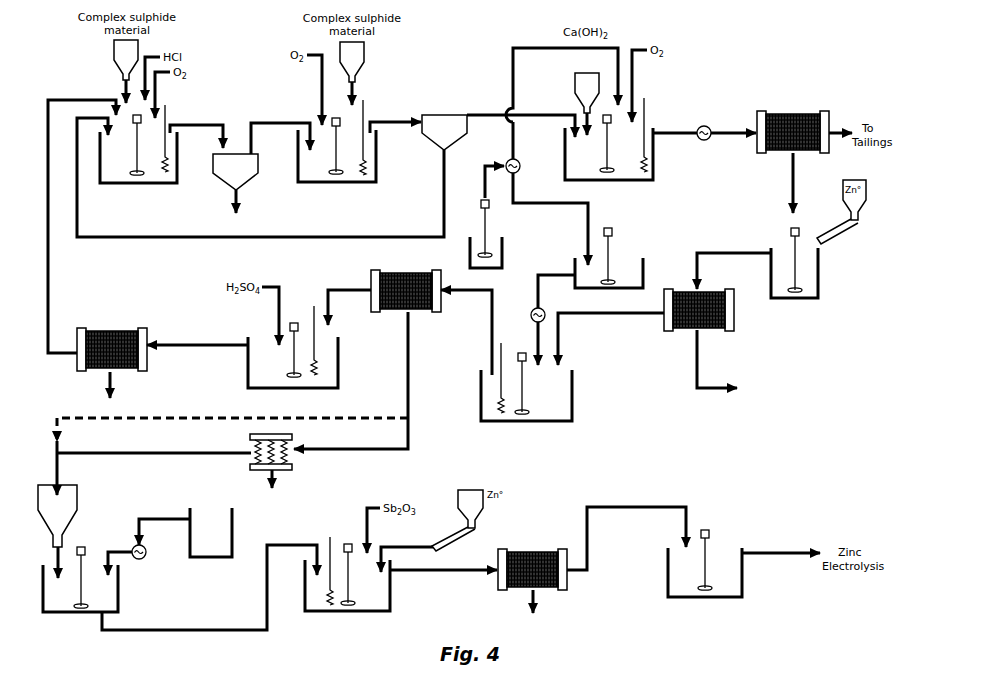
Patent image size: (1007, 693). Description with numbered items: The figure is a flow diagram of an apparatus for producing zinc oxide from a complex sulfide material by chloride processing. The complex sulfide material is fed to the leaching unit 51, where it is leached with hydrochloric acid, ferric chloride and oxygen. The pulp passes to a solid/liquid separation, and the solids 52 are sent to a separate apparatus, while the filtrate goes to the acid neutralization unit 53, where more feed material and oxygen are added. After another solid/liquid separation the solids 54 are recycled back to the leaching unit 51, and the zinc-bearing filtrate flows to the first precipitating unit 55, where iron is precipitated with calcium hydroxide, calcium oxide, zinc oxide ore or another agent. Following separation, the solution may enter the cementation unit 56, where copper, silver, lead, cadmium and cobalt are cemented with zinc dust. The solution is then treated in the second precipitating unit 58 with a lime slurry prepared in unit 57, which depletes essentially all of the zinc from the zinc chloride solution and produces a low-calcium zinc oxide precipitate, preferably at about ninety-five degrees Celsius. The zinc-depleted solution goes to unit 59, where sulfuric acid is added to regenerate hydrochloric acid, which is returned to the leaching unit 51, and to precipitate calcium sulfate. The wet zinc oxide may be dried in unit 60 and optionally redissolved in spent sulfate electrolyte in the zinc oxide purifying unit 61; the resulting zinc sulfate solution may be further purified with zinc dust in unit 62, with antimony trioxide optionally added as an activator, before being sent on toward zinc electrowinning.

The leaching unit 51 is at (153, 178).
The solids 52 is at (240, 193).
The acid neutralization unit 53 is at (318, 176).
The solids 54 is at (442, 183).
The first precipitating unit 55 is at (628, 173).
The cementation unit 56 is at (813, 295).
The lime slurry preparation unit 57 is at (642, 262).
The second precipitating unit 58 is at (557, 416).
The acid regeneration unit 59 is at (338, 362).
The drying unit 60 is at (257, 470).
The zinc oxide purifying unit 61 is at (52, 615).
The zinc dust purification unit 62 is at (383, 593).